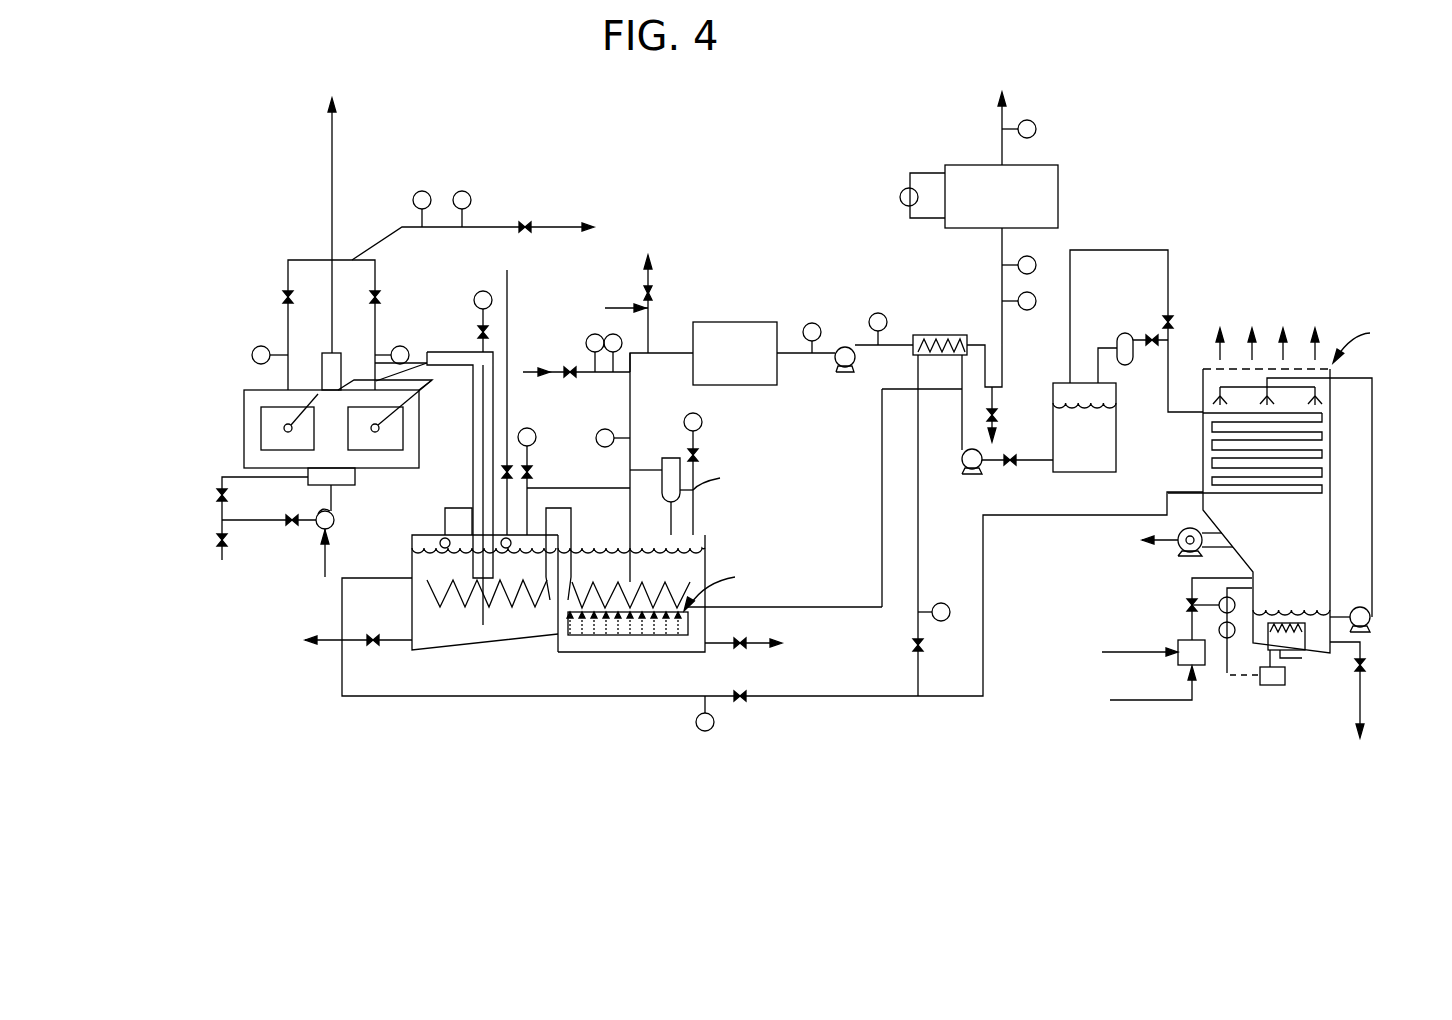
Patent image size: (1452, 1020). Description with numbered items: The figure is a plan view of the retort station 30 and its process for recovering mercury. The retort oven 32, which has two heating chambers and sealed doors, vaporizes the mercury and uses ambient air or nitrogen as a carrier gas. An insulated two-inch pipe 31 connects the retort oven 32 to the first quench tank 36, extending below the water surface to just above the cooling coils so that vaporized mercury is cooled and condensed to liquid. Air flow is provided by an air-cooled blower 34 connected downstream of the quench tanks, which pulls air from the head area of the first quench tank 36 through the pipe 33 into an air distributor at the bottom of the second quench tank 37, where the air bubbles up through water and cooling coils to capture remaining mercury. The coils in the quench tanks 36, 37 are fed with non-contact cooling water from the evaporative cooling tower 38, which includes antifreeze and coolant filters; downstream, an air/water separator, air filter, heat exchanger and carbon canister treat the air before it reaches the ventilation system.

The retort station 30 is at (1252, 92).
The insulated pipe 31 is at (494, 402).
The retort oven 32 is at (238, 380).
The pipe 33 is at (578, 488).
The blower 34 is at (846, 346).
The first quench tank 36 is at (403, 610).
The second quench tank 37 is at (707, 657).
The cooling tower 38 is at (1386, 499).